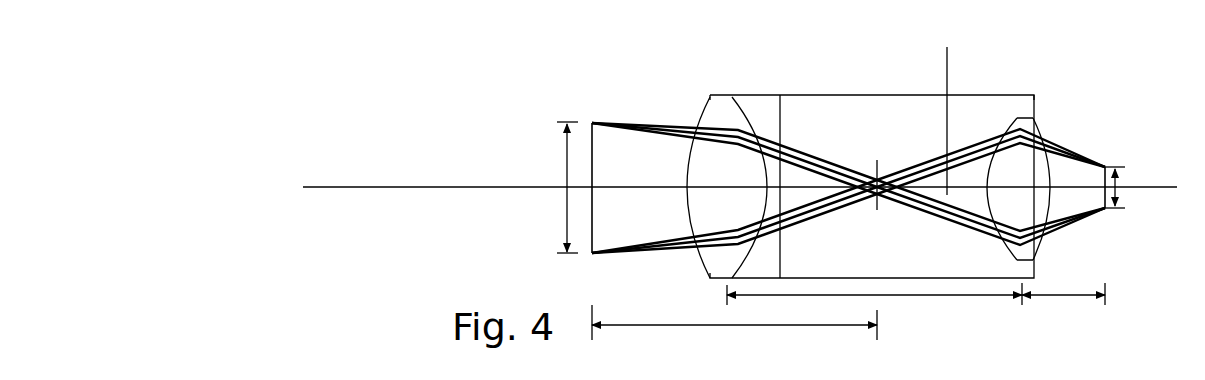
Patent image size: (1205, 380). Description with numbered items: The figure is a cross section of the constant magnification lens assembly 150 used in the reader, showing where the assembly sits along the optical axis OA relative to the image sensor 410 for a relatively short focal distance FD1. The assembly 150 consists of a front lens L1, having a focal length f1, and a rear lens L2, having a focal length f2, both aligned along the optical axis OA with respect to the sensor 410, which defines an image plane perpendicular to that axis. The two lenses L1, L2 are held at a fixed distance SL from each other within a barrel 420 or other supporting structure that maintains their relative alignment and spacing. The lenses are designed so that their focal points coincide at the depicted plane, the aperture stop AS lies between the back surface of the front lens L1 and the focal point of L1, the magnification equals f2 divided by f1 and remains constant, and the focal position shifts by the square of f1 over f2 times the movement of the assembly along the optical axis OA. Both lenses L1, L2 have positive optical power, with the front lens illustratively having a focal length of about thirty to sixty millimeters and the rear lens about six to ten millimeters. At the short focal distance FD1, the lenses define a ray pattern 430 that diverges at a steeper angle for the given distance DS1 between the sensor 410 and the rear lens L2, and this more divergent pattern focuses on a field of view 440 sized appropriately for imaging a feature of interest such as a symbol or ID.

The field of view 440 is at (565, 178).
The barrel 420 is at (818, 93).
The constant magnification lens assembly 150 is at (883, 91).
The ray pattern 430 is at (787, 152).
The sensor 410 is at (1123, 183).
The optical axis OA is at (407, 187).
The front lens L1 is at (727, 118).
The rear lens L2 is at (1028, 125).
The aperture stop AS is at (877, 176).
The focal distance FD1 is at (720, 326).
The fixed lens spacing SL is at (930, 296).
The sensor-to-rear-lens distance DS1 is at (1060, 297).